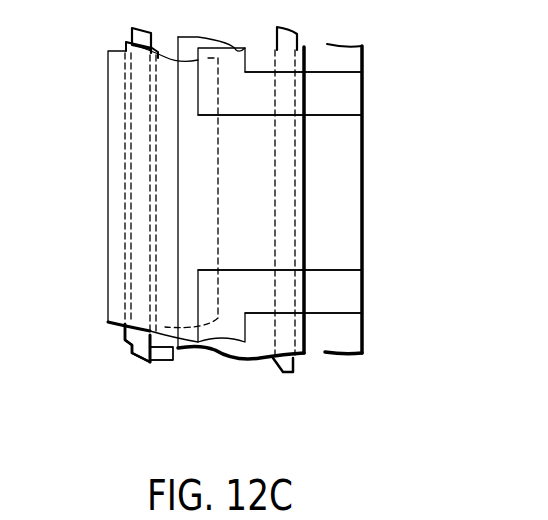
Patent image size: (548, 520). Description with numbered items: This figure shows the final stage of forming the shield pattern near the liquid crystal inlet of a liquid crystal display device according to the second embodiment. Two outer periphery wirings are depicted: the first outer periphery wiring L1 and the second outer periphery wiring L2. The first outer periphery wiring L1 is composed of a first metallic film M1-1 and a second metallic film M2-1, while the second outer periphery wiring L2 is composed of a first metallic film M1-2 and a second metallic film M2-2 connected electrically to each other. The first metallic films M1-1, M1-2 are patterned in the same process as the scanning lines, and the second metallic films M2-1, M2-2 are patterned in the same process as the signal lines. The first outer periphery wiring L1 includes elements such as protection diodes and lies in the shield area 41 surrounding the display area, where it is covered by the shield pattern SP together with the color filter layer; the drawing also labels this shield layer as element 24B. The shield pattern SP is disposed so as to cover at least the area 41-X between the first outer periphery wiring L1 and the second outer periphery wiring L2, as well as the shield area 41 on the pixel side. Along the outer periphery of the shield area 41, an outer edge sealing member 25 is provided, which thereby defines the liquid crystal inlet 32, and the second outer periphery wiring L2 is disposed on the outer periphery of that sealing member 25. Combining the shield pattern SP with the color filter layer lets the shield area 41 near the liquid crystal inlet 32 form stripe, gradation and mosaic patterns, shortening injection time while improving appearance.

The first metallic film M1-1 is at (147, 32).
The second metallic film M2-1 is at (128, 42).
The first metallic film M1-2 is at (286, 34).
The second metallic film M2-2 is at (362, 187).
The shield pattern SP is at (118, 110).
The stop member 24B is at (127, 196).
The outer edge sealing member 25 is at (347, 93).
The liquid crystal inlet 32 is at (347, 171).
The shield area 41 is at (202, 425).
The area between the first and second outer periphery wirings 41-X is at (151, 362).
The first outer periphery wiring L1 is at (143, 362).
The second outer periphery wiring L2 is at (278, 377).